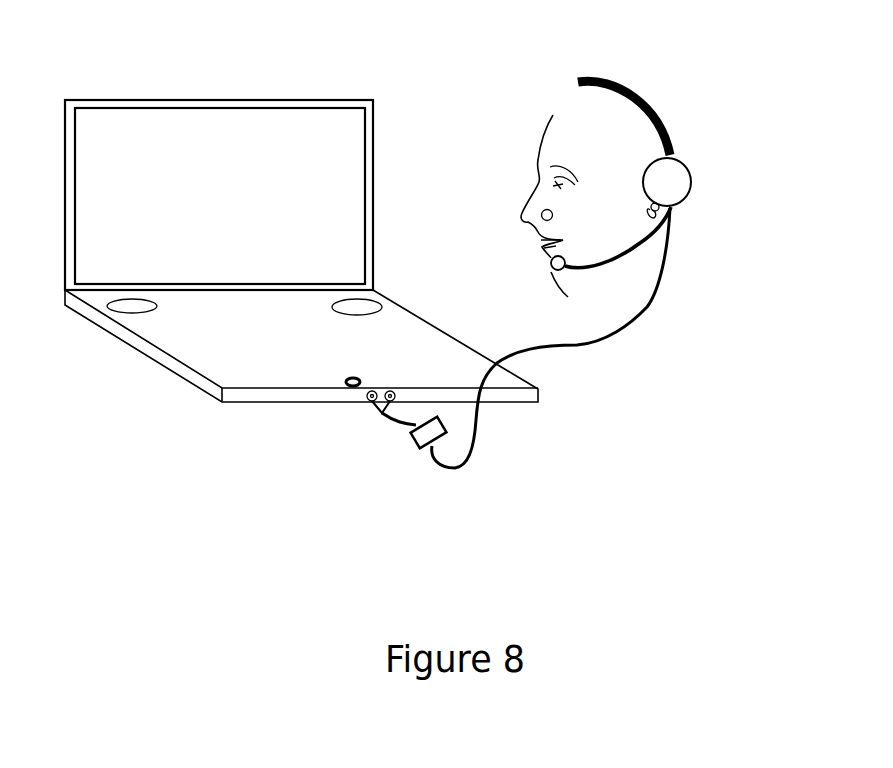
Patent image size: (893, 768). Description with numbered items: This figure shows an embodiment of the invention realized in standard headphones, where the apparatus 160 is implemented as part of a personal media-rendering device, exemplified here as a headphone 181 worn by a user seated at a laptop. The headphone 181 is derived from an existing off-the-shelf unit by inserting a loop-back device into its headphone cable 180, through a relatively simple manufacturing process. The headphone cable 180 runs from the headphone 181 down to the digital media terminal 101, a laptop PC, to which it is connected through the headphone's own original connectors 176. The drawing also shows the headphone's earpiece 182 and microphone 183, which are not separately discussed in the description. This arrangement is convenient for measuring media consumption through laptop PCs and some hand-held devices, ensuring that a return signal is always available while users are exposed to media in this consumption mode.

The digital media terminal 101 is at (155, 95).
The connectors 176 is at (360, 392).
The apparatus 160 is at (408, 443).
The headphone cable 180 is at (608, 350).
The headphone 181 is at (633, 94).
The earpiece 182 is at (695, 168).
The microphone 183 is at (567, 273).